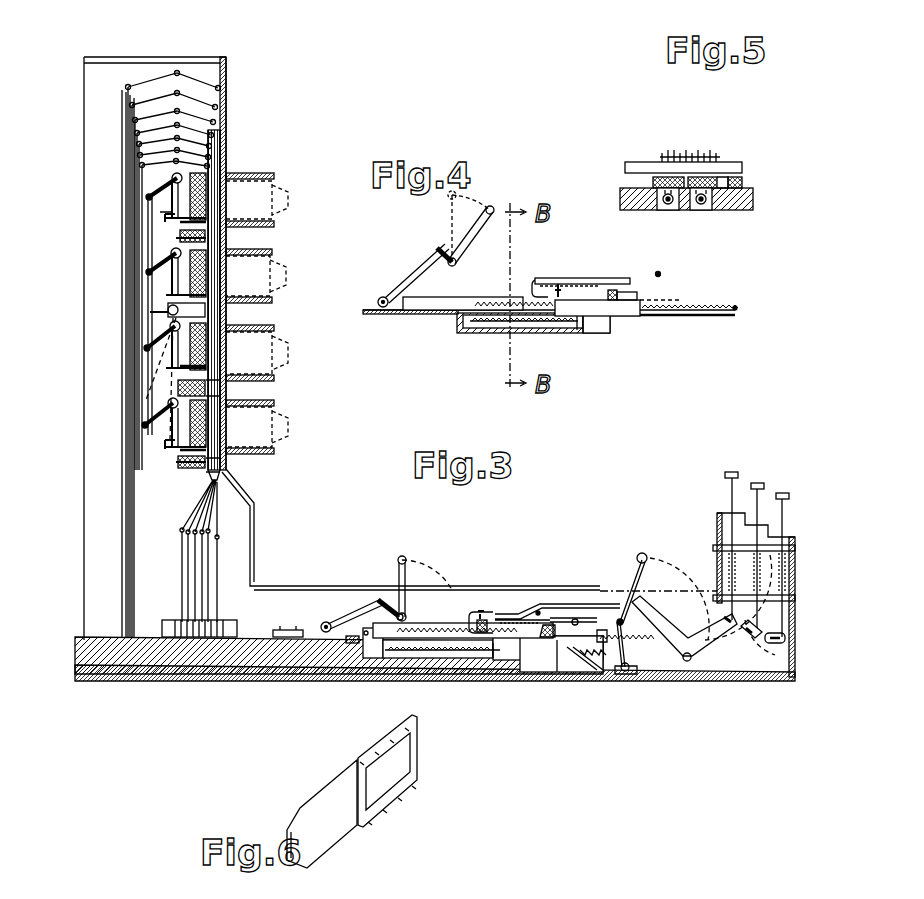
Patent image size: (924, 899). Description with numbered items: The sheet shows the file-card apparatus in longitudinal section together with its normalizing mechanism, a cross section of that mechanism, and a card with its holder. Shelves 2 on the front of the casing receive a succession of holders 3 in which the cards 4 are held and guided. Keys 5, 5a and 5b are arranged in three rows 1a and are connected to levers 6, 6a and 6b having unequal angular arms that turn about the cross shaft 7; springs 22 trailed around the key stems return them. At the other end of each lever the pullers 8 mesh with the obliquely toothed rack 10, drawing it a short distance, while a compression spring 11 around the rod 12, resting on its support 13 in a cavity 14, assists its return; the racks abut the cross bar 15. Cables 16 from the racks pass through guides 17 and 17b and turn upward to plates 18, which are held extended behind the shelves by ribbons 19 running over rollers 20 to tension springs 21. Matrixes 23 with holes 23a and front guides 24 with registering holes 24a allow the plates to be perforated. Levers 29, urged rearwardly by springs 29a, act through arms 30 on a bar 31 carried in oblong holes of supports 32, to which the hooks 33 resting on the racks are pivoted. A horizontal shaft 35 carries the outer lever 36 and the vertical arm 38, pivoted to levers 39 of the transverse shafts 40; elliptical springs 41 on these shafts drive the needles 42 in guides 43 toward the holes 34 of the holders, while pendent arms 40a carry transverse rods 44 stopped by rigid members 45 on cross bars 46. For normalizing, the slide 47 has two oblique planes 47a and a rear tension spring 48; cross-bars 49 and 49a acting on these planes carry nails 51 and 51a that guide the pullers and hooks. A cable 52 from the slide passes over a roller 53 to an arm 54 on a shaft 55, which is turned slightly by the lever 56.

In FIG. 3, the rows 1a is at (717, 515).
In FIG. 3, the shelves 2 is at (272, 174).
In FIG. 3, the holders 3 is at (273, 270).
In FIG. 6, the holders 3 is at (387, 771).
In FIG. 3, the cards 4 is at (286, 288).
In FIG. 6, the cards 4 is at (322, 814).
In FIG. 3, the key 5 is at (789, 497).
In FIG. 3, the key 5a is at (765, 487).
In FIG. 3, the key 5b is at (740, 476).
In FIG. 3, the lever 6 is at (773, 646).
In FIG. 3, the lever 6a is at (748, 642).
In FIG. 3, the lever 6b is at (705, 632).
In FIG. 3, the cross shaft 7 is at (687, 665).
In FIG. 3, the pullers 8 is at (545, 619).
In FIG. 4, the pullers 8 is at (540, 277).
In FIG. 5, the pullers 8 is at (672, 157).
In FIG. 3, the rack 10 is at (445, 633).
In FIG. 5, the rack 10 is at (652, 182).
In FIG. 3, the compression spring 11 is at (415, 656).
In FIG. 4, the compression spring 11 is at (505, 322).
In FIG. 5, the compression spring 11 is at (670, 203).
In FIG. 3, the rod 12 is at (435, 656).
In FIG. 4, the rod 12 is at (600, 318).
In FIG. 5, the rod 12 is at (703, 205).
In FIG. 3, the support 13 is at (498, 663).
In FIG. 4, the support 13 is at (592, 324).
In FIG. 5, the support 13 is at (662, 203).
In FIG. 3, the cavity 14 is at (378, 650).
In FIG. 4, the cavity 14 is at (455, 323).
In FIG. 5, the cavity 14 is at (628, 202).
In FIG. 3, the cross bar 15 is at (350, 645).
In FIG. 3, the cables 16 is at (252, 560).
In FIG. 3, the guides 17 is at (294, 628).
In FIG. 3, the guide 17b is at (183, 640).
In FIG. 3, the plates 18 is at (221, 175).
In FIG. 3, the ribbons 19 is at (128, 140).
In FIG. 3, the rollers 20 is at (131, 115).
In FIG. 3, the tension springs 21 is at (121, 534).
In FIG. 3, the springs 22 is at (782, 569).
In FIG. 3, the matrixes 23 is at (180, 243).
In FIG. 3, the holes 23a is at (200, 470).
In FIG. 3, the guides 24 is at (220, 386).
In FIG. 3, the holes 24a is at (220, 395).
In FIG. 3, the levers 29 is at (608, 665).
In FIG. 3, the springs 29a is at (605, 730).
In FIG. 3, the arms 30 is at (641, 560).
In FIG. 3, the bar 31 is at (580, 600).
In FIG. 3, the supports 32 is at (600, 625).
In FIG. 3, the hooks 33 is at (538, 612).
In FIG. 4, the hooks 33 is at (666, 267).
In FIG. 5, the hooks 33 is at (710, 157).
In FIG. 3, the holes 34 is at (273, 283).
In FIG. 3, the horizontal shaft 35 is at (168, 311).
In FIG. 3, the lever 36 is at (150, 349).
In FIG. 3, the vertical arm 38 is at (166, 280).
In FIG. 3, the levers 39 is at (172, 200).
In FIG. 3, the shafts 40 is at (175, 180).
In FIG. 3, the pendent arms 40a is at (148, 280).
In FIG. 3, the springs 41 is at (170, 210).
In FIG. 3, the needles 42 is at (178, 237).
In FIG. 3, the guides 43 is at (208, 372).
In FIG. 3, the transverse rods 44 is at (185, 222).
In FIG. 3, the rigid members 45 is at (170, 217).
In FIG. 3, the cross bars 46 is at (206, 197).
In FIG. 3, the slide 47 is at (430, 630).
In FIG. 4, the slide 47 is at (420, 304).
In FIG. 5, the slide 47 is at (744, 184).
In FIG. 3, the oblique planes 47a is at (522, 628).
In FIG. 4, the oblique planes 47a is at (522, 296).
In FIG. 3, the tension spring 48 is at (640, 640).
In FIG. 4, the tension spring 48 is at (705, 307).
In FIG. 3, the cross-bar 49 is at (493, 630).
In FIG. 4, the cross-bar 49 is at (573, 282).
In FIG. 5, the cross-bar 49 is at (742, 166).
In FIG. 3, the cross-bar 49a is at (560, 612).
In FIG. 3, the nails 51 is at (482, 612).
In FIG. 4, the nails 51 is at (558, 282).
In FIG. 5, the nails 51 is at (662, 158).
In FIG. 3, the nails 51a is at (548, 646).
In FIG. 4, the nails 51a is at (620, 292).
In FIG. 5, the nails 51a is at (716, 157).
In FIG. 3, the cable 52 is at (366, 612).
In FIG. 4, the cable 52 is at (412, 280).
In FIG. 3, the roller 53 is at (329, 622).
In FIG. 4, the roller 53 is at (381, 298).
In FIG. 3, the arm 54 is at (393, 600).
In FIG. 4, the arm 54 is at (445, 256).
In FIG. 3, the shaft 55 is at (420, 610).
In FIG. 4, the shaft 55 is at (456, 260).
In FIG. 3, the lever 56 is at (408, 566).
In FIG. 4, the lever 56 is at (489, 205).